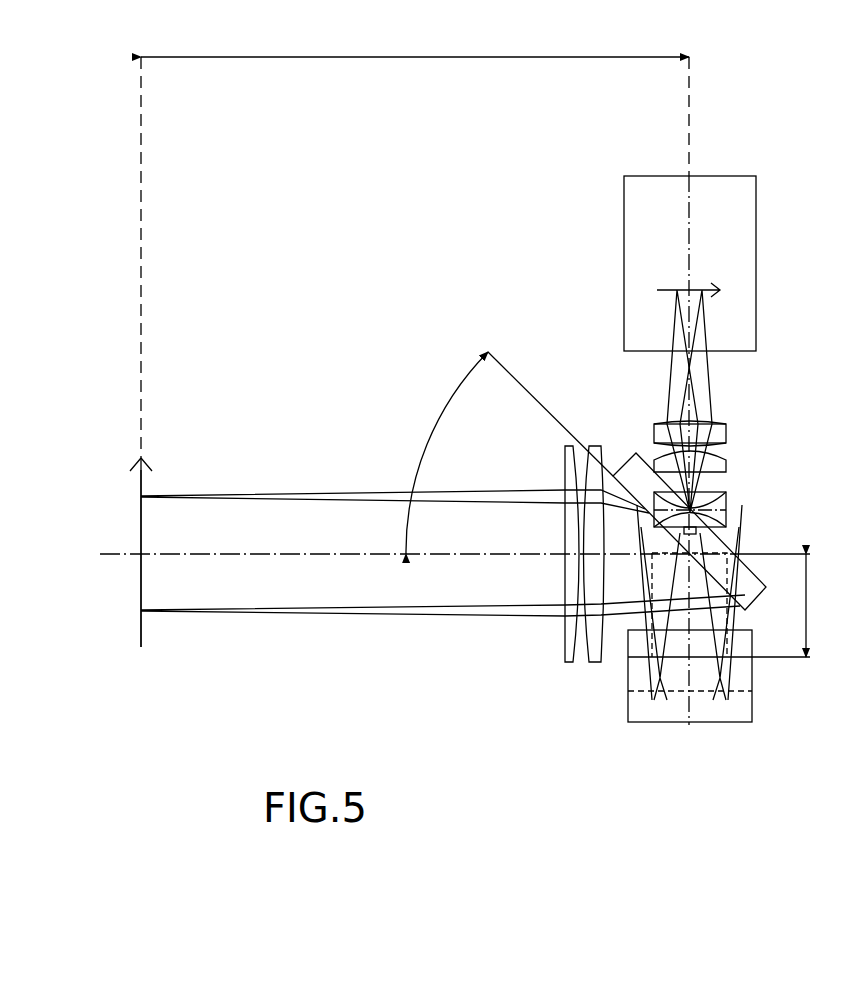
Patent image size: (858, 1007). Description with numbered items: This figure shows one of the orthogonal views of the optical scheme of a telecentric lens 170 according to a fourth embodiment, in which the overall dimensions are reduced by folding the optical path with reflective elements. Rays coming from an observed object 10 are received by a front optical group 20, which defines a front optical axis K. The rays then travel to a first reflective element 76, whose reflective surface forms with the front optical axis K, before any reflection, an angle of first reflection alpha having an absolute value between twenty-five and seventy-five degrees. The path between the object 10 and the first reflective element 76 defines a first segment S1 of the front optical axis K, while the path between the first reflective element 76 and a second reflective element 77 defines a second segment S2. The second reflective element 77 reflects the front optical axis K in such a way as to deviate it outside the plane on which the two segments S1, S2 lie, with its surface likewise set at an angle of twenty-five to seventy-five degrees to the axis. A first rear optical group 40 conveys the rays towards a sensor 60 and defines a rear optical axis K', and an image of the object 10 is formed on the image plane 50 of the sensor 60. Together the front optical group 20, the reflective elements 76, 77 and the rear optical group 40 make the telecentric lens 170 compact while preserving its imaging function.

The observed object 10 is at (141, 515).
The front optical group 20 is at (597, 438).
The first rear optical group 40 is at (735, 505).
The image plane 50 is at (660, 289).
The sensor 60 is at (650, 176).
The first reflective element 76 is at (753, 566).
The second reflective element 77 is at (690, 722).
The telecentric lens 170 is at (328, 271).
The front optical axis K is at (412, 352).
The rear optical axis K' is at (760, 391).
The first segment of the front optical axis S1 is at (415, 42).
The second segment of the front optical axis S2 is at (734, 605).
The angle of first reflection alpha is at (506, 453).